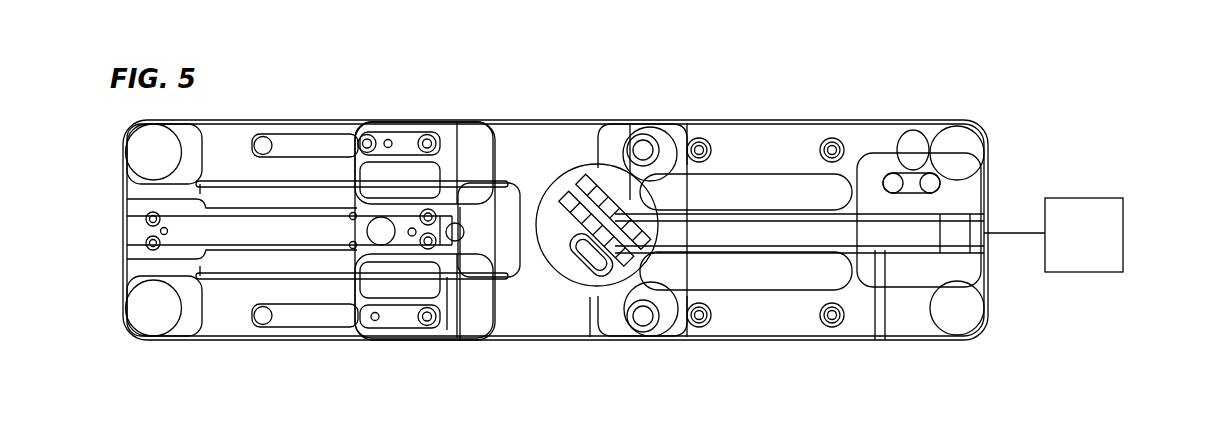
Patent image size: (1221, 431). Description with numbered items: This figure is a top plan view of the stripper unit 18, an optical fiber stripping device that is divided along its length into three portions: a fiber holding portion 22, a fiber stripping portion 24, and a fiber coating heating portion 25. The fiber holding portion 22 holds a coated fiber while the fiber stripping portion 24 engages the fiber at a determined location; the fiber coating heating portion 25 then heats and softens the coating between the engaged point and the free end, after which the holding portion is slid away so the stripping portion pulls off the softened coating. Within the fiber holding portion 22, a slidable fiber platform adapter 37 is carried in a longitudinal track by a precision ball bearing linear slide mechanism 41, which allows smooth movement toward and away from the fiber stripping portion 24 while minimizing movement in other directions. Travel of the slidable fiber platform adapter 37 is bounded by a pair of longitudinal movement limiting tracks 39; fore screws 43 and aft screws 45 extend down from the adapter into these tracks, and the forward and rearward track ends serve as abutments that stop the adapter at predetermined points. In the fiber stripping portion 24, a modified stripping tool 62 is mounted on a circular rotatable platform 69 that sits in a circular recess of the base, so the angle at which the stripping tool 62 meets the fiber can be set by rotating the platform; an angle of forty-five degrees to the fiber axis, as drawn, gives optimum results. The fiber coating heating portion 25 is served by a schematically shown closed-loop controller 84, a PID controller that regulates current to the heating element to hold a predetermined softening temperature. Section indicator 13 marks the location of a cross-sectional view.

The section line 13- 13 is at (724, 270).
The stripper unit 18 is at (944, 88).
The fiber holding portion 22 is at (295, 355).
The fiber stripping portion 24 is at (567, 355).
The fiber coating heating portion 25 is at (765, 355).
The slidable fiber platform adapter 37 is at (457, 137).
The longitudinal movement limiting tracks 39 is at (312, 144).
The linear slide mechanism 41 is at (272, 234).
The fore screws 43 is at (420, 130).
The aft screws 45 is at (367, 130).
The stripping tool 62 is at (581, 257).
The circular rotatable platform 69 is at (554, 200).
The closed-loop controller 84 is at (1082, 197).